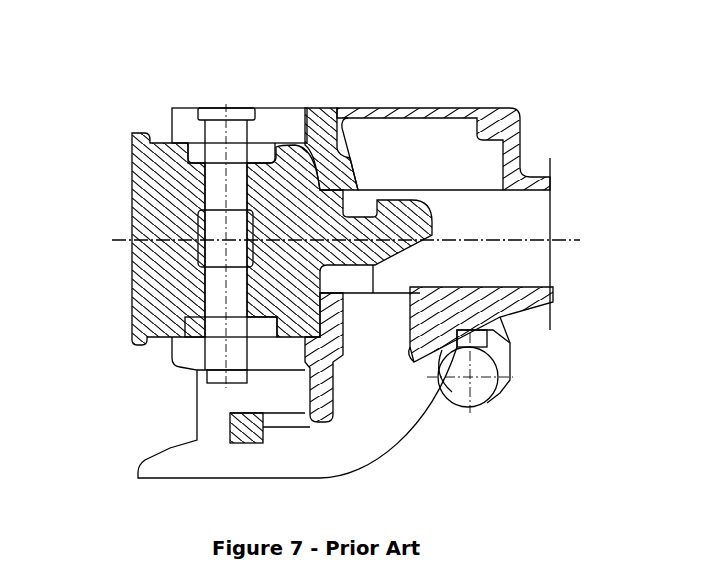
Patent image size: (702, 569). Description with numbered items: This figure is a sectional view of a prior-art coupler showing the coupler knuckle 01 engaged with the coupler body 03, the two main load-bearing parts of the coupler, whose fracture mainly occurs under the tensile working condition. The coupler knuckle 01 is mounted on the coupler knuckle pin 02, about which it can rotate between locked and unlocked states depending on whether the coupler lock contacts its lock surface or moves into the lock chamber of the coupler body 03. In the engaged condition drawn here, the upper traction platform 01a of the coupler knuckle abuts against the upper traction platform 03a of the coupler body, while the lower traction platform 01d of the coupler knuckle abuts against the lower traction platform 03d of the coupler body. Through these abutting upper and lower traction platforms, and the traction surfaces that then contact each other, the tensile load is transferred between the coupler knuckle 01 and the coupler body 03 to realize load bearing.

The coupler knuckle 01 is at (263, 207).
The coupler knuckle pin 02 is at (210, 188).
The coupler body 03 is at (312, 112).
The upper traction platform of the coupler body 03a is at (365, 193).
The upper traction platform of the coupler knuckle 01a is at (393, 197).
The lower traction platform of the coupler body 03d is at (360, 293).
The lower traction platform of the coupler knuckle 01d is at (390, 287).